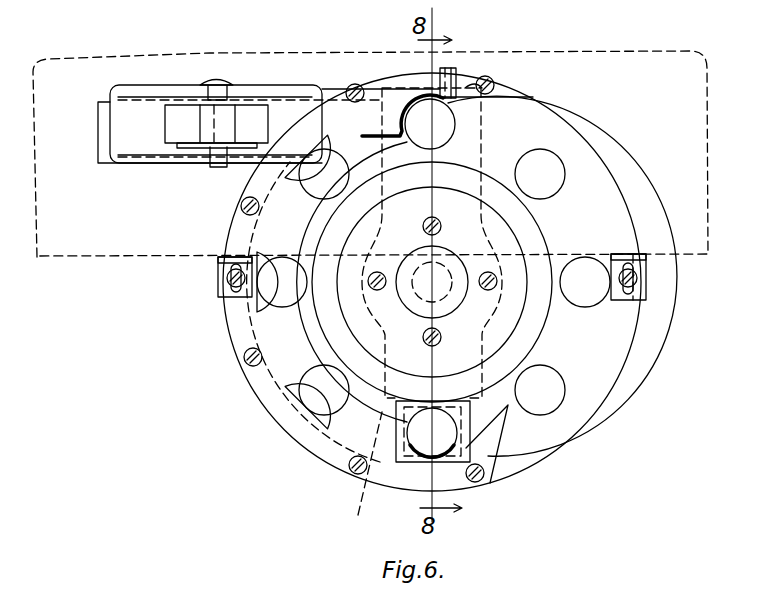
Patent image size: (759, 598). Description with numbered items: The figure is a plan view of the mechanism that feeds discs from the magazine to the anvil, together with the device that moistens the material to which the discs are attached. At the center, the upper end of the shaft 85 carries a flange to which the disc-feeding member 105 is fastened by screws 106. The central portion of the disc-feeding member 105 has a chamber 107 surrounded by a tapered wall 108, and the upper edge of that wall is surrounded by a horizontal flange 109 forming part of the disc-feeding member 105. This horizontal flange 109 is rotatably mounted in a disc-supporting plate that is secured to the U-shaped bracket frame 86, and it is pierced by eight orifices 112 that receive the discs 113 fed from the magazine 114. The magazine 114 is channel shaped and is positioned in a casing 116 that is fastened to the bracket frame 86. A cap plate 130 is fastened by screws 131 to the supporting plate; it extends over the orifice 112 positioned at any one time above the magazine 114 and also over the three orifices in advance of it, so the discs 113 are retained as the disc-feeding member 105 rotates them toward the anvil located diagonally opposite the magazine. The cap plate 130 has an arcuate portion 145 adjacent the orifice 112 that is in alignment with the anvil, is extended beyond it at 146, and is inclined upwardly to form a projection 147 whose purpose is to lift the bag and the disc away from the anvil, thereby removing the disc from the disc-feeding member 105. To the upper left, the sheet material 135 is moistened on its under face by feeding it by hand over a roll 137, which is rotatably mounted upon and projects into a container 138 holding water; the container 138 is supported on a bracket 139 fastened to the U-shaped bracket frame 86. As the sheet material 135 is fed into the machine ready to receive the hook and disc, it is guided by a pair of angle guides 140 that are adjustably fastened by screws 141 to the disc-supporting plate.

The shaft 85 is at (443, 297).
The U-shaped bracket frame 86 is at (385, 398).
The disc-feeding member 105 is at (439, 267).
The screws 106 is at (380, 277).
The chamber 107 is at (505, 242).
The tapered wall 108 is at (530, 222).
The horizontal flange 109 is at (578, 187).
The orifices 112 is at (553, 162).
The discs 113 is at (318, 188).
The magazine 114 is at (412, 455).
The casing 116 is at (360, 477).
The cap plate 130 is at (268, 384).
The screws 131 is at (243, 206).
The sheet material 135 is at (628, 66).
The roll 137 is at (188, 112).
The container 138 is at (130, 94).
The bracket 139 is at (103, 114).
The angle guides 140 is at (218, 269).
The screws 141 is at (232, 281).
The arcuate portion 145 is at (405, 100).
The extension 146 is at (513, 90).
The projection 147 is at (468, 78).